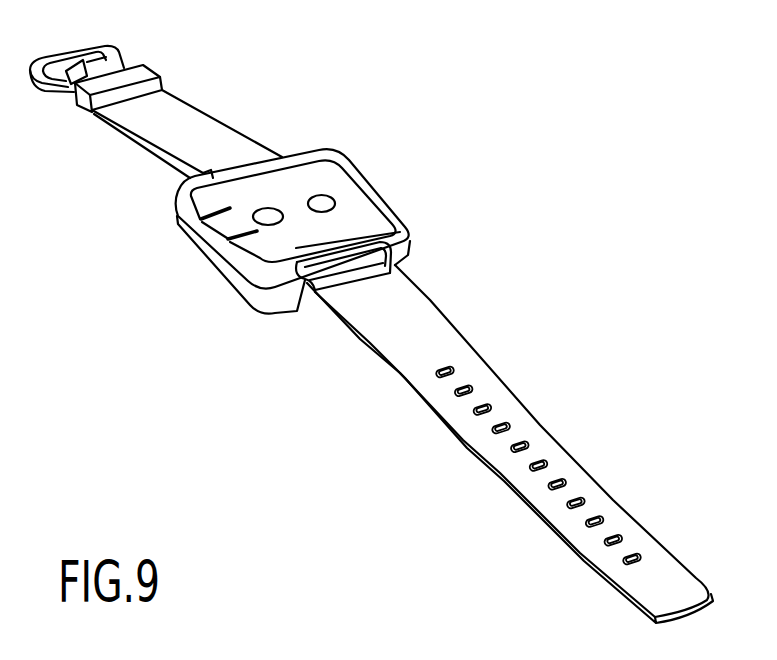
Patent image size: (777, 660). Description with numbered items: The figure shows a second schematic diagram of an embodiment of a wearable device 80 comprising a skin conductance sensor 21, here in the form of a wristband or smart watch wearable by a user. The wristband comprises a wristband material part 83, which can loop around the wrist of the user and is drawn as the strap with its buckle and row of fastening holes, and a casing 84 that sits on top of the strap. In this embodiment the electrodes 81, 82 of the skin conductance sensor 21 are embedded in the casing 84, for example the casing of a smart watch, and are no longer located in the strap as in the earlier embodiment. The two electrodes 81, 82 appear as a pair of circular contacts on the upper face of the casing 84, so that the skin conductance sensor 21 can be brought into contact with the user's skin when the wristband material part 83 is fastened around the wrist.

The wearable device 80 is at (456, 110).
The skin conductance sensor 21 is at (255, 82).
The electrode 81 is at (268, 214).
The electrode 82 is at (321, 203).
The wristband material part 83 is at (415, 367).
The casing 84 is at (201, 243).